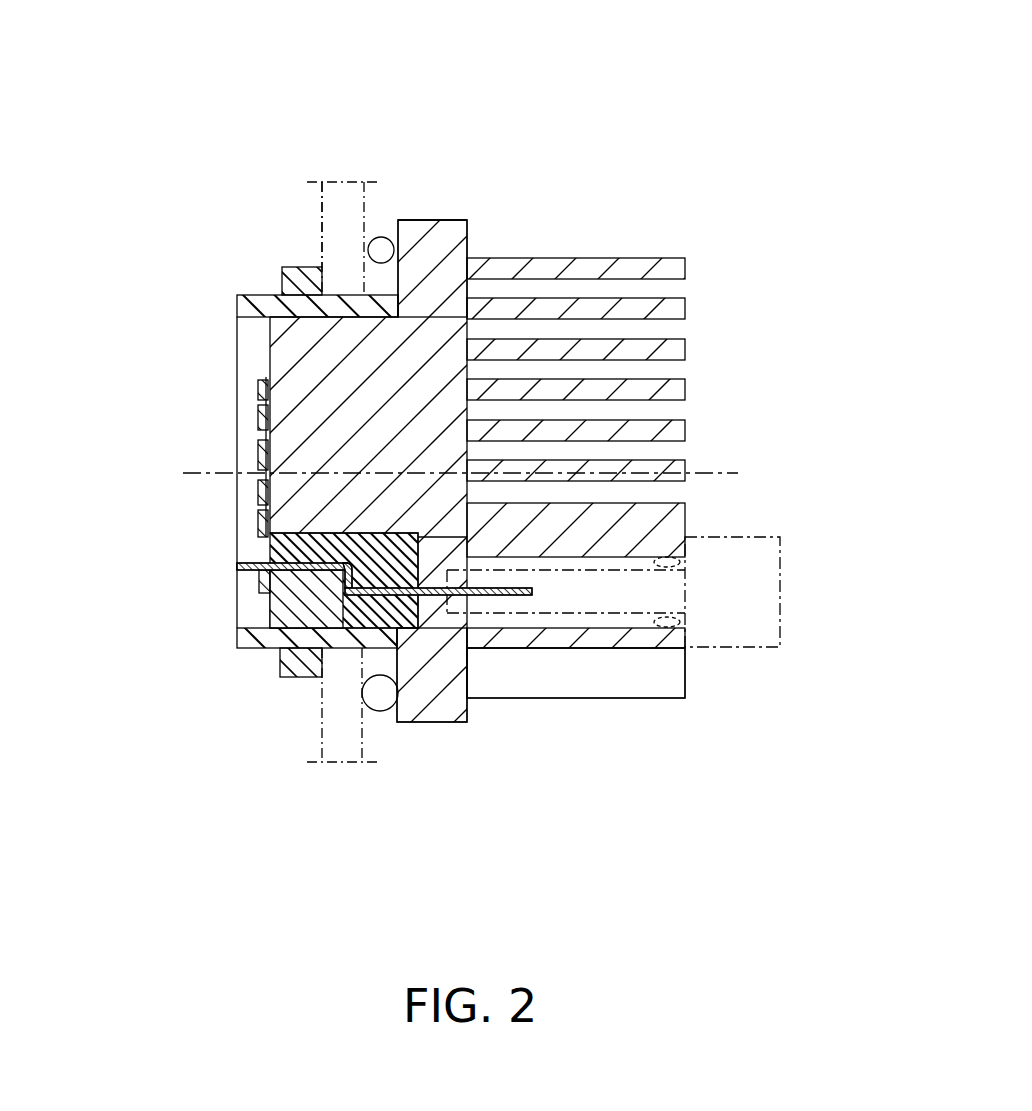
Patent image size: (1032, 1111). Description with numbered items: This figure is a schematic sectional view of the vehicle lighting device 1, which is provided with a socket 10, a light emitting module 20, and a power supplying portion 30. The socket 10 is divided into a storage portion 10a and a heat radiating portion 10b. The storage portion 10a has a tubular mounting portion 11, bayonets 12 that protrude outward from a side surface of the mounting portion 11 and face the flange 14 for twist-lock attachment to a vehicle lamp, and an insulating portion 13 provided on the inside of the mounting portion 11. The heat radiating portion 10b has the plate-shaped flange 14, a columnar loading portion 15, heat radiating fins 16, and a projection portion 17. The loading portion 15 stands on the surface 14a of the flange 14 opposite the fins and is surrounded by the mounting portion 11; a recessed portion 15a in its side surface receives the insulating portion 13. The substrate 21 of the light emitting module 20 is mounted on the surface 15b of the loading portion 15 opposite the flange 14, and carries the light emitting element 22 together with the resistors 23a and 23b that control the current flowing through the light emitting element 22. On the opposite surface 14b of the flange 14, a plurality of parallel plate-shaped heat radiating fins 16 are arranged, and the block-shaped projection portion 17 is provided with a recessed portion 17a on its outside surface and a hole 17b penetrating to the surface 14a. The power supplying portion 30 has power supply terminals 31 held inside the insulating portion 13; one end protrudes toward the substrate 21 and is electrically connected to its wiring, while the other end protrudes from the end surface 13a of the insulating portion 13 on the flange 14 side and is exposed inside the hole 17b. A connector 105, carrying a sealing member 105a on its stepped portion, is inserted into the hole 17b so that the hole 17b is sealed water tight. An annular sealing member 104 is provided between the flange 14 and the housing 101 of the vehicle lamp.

The vehicle lighting device 1 is at (757, 113).
The socket 10 is at (288, 63).
The storage portion 10a is at (292, 262).
The heat radiating portion 10b is at (437, 215).
The housing 101 is at (320, 230).
The sealing member 104 is at (347, 288).
The mounting portion 11 is at (250, 645).
The bayonets 12 is at (303, 662).
The insulating portion 13 is at (323, 610).
The end surface of the insulating portion 13a is at (425, 543).
The flange 14 is at (430, 262).
The surface of the flange 14a is at (395, 252).
The surface of the flange 14b is at (470, 705).
The loading portion 15 is at (335, 375).
The recessed portion 15a is at (390, 540).
The surface of the loading portion 15b is at (265, 352).
The heat radiating fins 16 is at (662, 268).
The projection portion 17 is at (663, 520).
The recessed portion 17a is at (562, 652).
The hole 17b is at (598, 625).
The light emitting module 20 is at (247, 543).
The substrate 21 is at (262, 378).
The light emitting element 22 is at (255, 460).
The resistor 23a is at (257, 412).
The resistor 23b is at (258, 520).
The power supplying portion 30 is at (247, 582).
The power supply terminals 31 is at (412, 597).
The connector 105 is at (745, 525).
The sealing member 105a is at (660, 558).